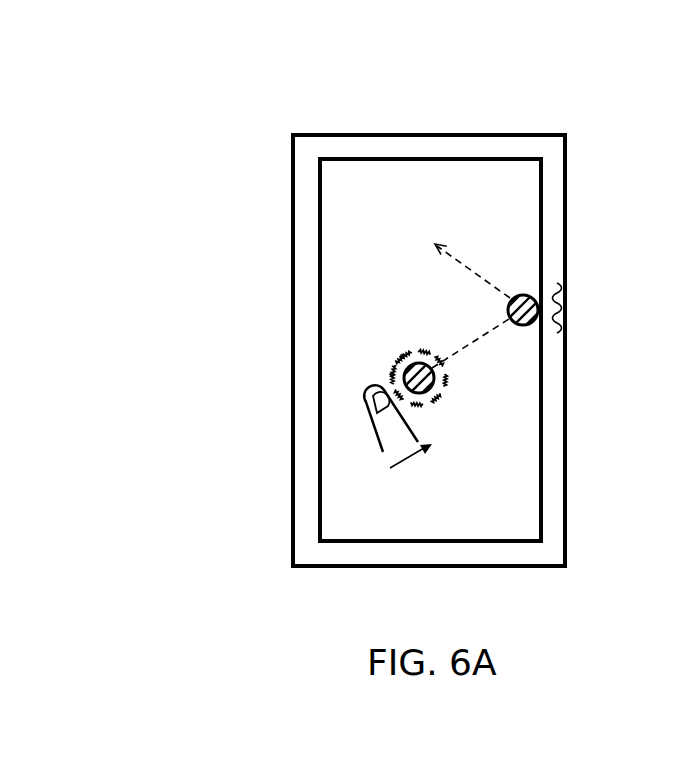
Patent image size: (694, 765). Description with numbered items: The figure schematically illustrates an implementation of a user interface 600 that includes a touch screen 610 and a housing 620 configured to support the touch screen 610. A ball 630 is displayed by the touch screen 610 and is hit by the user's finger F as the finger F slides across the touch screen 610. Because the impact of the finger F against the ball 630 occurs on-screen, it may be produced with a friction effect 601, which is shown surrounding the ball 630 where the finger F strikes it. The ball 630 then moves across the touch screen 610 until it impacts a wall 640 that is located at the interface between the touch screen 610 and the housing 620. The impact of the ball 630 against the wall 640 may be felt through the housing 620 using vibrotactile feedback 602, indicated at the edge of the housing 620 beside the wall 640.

The user interface 600 is at (310, 100).
The touch screen 610 is at (335, 242).
The housing 620 is at (553, 193).
The friction effect 601 is at (392, 352).
The ball 630 is at (443, 387).
The wall 640 is at (546, 268).
The vibrotactile feedback 602 is at (557, 340).
The finger F is at (383, 455).